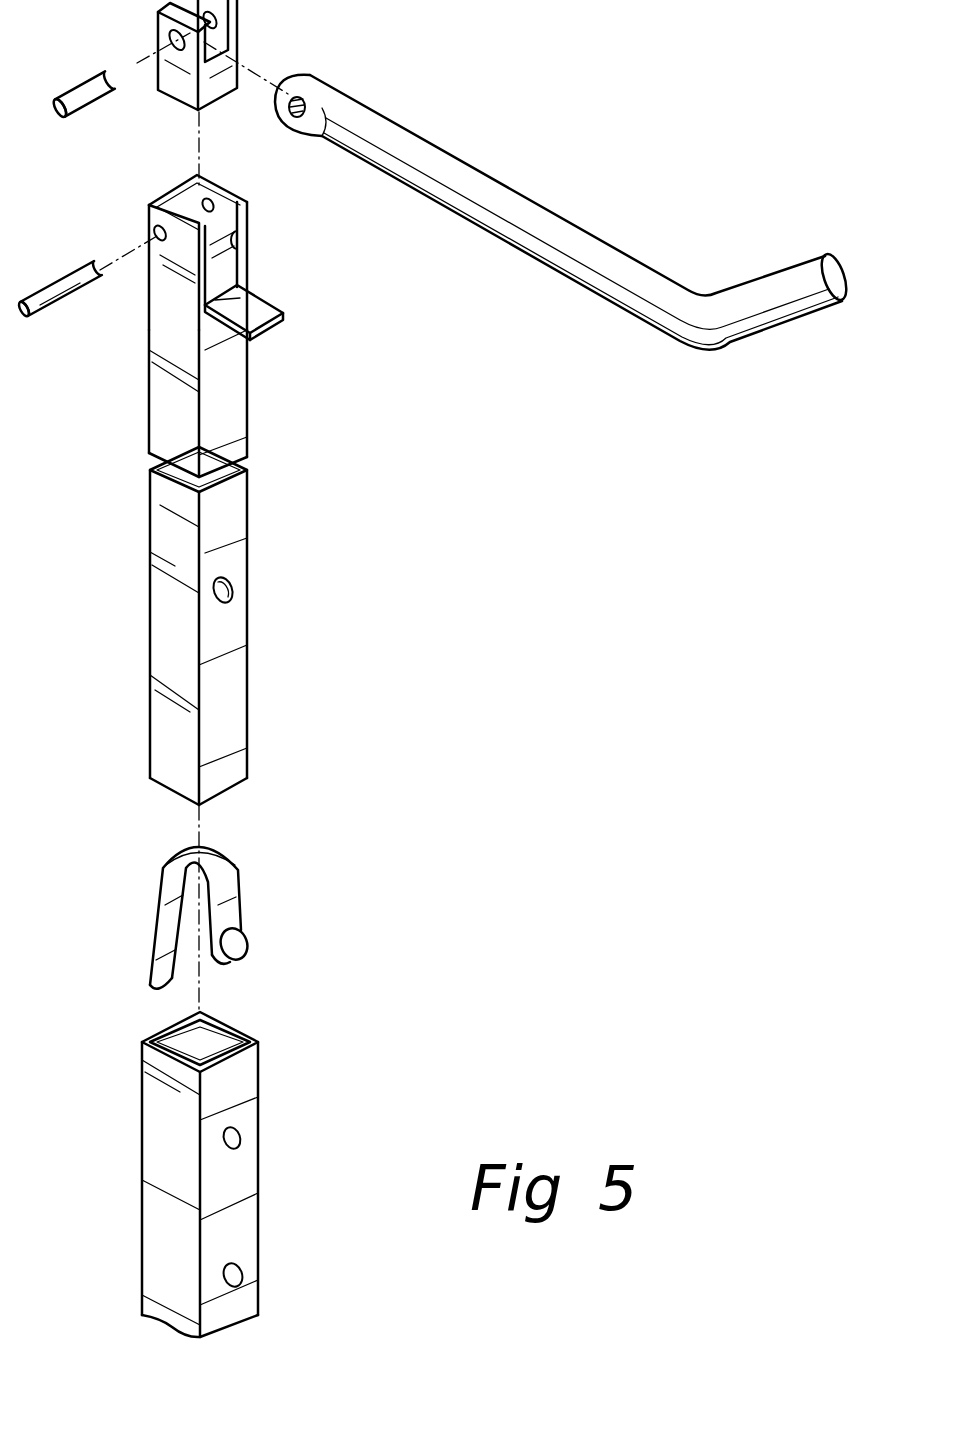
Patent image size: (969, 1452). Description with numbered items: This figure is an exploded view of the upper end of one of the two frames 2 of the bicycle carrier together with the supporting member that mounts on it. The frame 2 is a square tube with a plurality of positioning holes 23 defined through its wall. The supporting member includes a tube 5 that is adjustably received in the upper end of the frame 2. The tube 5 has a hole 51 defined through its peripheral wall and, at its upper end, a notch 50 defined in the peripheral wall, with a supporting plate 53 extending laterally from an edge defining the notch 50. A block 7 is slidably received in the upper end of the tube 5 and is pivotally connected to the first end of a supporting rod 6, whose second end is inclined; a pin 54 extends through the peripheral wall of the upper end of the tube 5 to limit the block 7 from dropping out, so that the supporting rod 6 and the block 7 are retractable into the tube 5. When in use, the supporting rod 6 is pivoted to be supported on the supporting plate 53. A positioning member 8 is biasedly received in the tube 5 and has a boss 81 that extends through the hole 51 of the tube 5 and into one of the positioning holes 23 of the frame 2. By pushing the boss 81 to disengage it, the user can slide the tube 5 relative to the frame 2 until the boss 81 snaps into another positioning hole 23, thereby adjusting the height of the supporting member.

The frame 2 is at (234, 1174).
The positioning hole 23 is at (241, 1134).
The tube 5 is at (241, 626).
The hole 51 is at (233, 588).
The notch 50 is at (242, 250).
The supporting plate 53 is at (262, 298).
The pin 54 is at (45, 294).
The supporting rod 6 is at (546, 217).
The block 7 is at (233, 32).
The positioning member 8 is at (236, 899).
The boss 81 is at (248, 942).